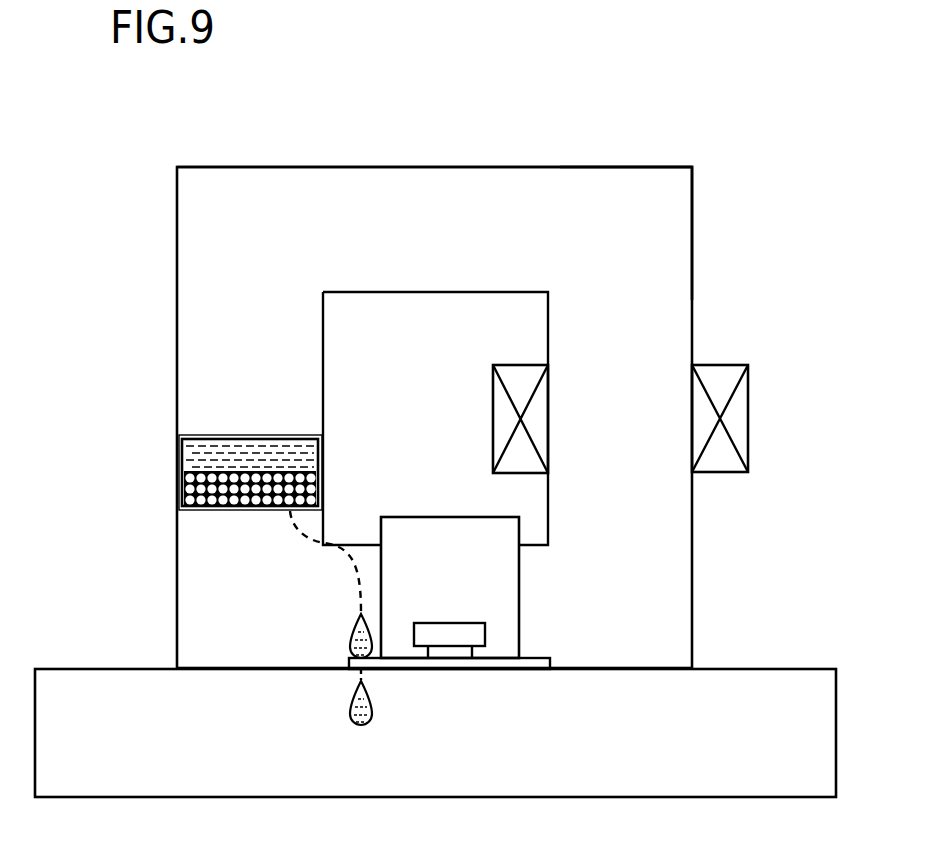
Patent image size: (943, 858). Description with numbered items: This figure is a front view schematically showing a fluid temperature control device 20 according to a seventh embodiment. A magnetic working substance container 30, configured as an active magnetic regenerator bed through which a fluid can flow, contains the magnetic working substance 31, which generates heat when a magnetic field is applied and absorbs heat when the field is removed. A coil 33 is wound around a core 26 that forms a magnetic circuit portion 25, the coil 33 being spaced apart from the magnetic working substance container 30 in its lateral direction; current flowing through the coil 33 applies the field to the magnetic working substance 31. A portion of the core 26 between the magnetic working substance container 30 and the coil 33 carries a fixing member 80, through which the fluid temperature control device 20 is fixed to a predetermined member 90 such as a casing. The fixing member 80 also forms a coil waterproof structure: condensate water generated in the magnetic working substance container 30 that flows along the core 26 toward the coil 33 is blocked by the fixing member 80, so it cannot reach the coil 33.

The fluid temperature control device 20 is at (295, 146).
The magnetic circuit portion 25 is at (530, 165).
The core 26 is at (632, 166).
The magnetic working substance container 30 is at (176, 475).
The magnetic working substance 31 is at (302, 488).
The coil 33 is at (748, 408).
The fixing member 80 is at (444, 516).
The predetermined member 90 is at (80, 668).